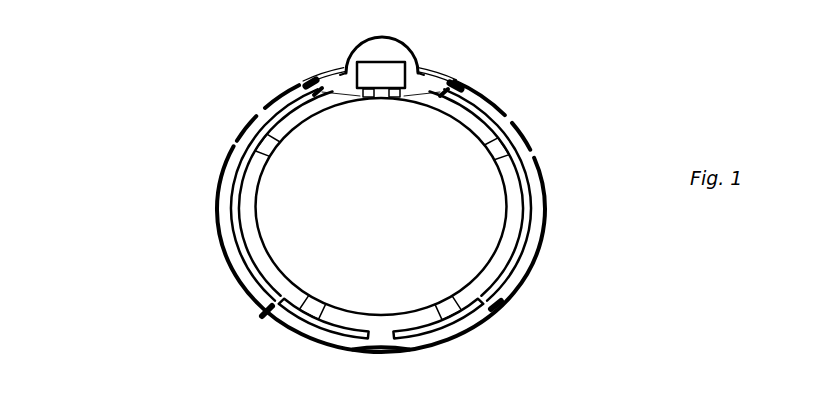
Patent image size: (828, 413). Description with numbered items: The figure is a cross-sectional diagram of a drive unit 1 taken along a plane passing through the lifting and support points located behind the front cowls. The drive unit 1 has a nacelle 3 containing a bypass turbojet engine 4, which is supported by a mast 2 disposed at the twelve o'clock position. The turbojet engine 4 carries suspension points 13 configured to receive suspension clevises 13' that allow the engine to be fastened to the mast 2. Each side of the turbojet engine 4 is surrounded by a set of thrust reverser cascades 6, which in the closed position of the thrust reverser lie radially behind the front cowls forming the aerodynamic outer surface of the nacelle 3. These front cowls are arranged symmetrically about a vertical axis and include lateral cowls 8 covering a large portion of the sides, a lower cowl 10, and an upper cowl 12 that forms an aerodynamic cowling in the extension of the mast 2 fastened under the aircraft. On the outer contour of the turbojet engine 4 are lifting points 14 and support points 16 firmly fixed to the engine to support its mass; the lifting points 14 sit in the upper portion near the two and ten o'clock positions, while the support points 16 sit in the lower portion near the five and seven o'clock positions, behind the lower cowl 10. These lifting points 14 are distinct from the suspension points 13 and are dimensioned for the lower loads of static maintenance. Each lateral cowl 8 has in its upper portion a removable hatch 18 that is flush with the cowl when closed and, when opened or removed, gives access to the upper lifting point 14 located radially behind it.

The drive unit 1 is at (181, 226).
The mast 2 is at (388, 77).
The nacelle 3 is at (251, 305).
The bypass turbojet engine 4 is at (505, 199).
The thrust reverser cascades 6 is at (533, 221).
The lateral cowl 8 is at (537, 264).
The lower cowl 10 is at (424, 350).
The upper cowl 12 is at (364, 41).
The suspension points 13 is at (378, 84).
The suspension clevises 13' is at (377, 67).
The lifting points 14 is at (488, 151).
The support points 16 is at (447, 312).
The hatch 18 is at (528, 127).